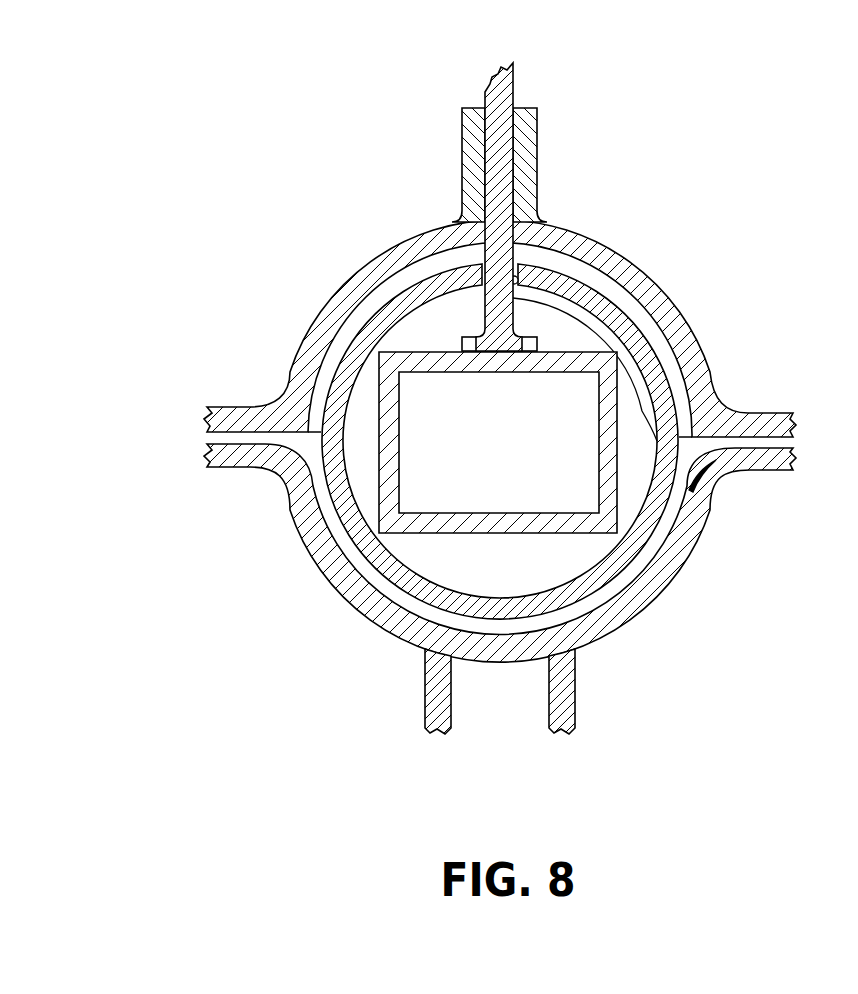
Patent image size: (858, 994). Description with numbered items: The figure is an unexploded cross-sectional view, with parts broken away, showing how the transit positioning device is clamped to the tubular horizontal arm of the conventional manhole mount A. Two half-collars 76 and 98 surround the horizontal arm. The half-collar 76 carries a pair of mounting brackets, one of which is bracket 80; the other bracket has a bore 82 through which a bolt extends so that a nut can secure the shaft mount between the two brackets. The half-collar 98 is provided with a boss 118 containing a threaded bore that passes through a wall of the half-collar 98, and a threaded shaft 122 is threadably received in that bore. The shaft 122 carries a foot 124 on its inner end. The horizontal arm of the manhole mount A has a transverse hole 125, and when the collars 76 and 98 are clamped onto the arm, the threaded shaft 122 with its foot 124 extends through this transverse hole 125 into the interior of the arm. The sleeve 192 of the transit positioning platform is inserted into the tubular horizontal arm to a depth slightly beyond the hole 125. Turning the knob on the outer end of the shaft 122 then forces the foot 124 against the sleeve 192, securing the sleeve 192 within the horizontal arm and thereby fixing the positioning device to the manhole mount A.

The half-collar 76 is at (694, 560).
The mounting bracket 80 is at (568, 690).
The bore 82 is at (430, 700).
The half-collar 98 is at (703, 348).
The boss 118 is at (523, 140).
The threaded shaft 122 is at (503, 90).
The foot 124 is at (525, 343).
The transverse hole 125 is at (508, 286).
The sleeve 192 is at (608, 428).
The manhole mount A is at (345, 497).